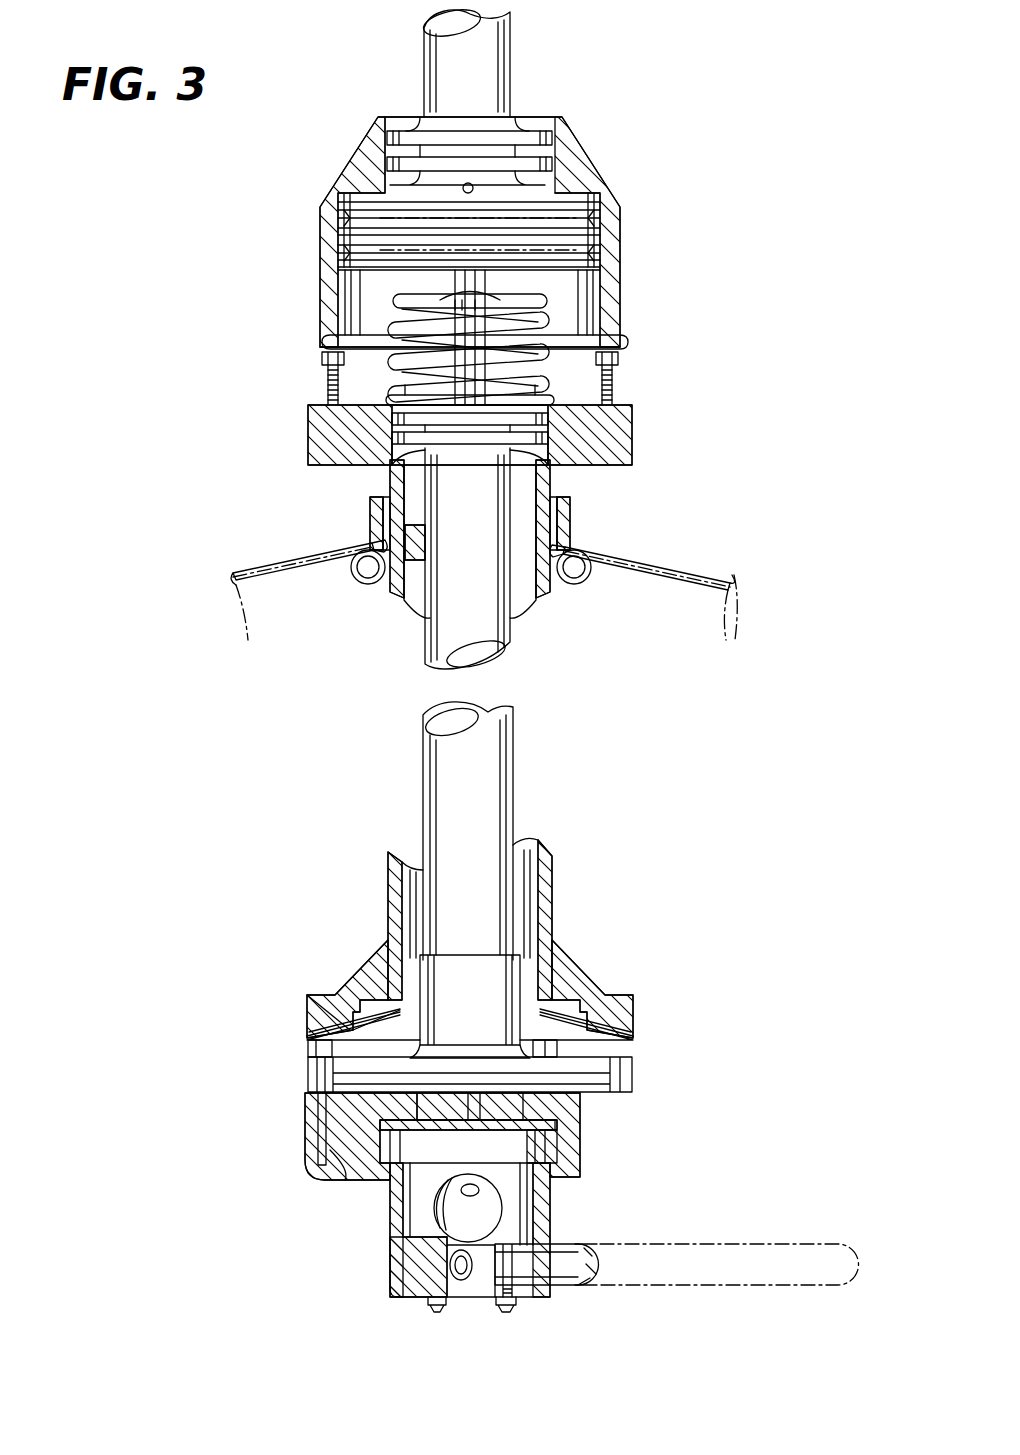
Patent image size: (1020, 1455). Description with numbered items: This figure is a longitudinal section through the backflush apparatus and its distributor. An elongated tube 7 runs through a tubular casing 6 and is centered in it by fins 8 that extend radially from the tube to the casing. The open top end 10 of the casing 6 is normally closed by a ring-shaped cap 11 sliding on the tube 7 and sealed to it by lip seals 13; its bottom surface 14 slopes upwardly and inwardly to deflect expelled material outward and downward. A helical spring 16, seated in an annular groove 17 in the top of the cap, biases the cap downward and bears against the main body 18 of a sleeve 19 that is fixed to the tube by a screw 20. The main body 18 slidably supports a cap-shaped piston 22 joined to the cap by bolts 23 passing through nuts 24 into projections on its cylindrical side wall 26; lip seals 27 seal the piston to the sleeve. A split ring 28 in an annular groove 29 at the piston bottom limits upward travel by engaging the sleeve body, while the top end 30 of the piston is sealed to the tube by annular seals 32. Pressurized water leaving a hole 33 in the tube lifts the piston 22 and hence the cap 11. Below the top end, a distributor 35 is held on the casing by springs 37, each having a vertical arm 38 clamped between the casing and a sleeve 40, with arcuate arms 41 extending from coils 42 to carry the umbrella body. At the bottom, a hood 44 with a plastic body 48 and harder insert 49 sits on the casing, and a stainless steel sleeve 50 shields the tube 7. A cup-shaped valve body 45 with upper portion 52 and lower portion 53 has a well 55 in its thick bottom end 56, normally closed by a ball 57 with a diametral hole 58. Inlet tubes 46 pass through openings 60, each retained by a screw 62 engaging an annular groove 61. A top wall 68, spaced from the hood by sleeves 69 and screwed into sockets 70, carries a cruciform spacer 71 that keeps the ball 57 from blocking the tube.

The casing 6 is at (554, 855).
The tube 7 is at (516, 748).
The fins 8 is at (412, 560).
The open top end 10 is at (550, 472).
The cap 11 is at (632, 432).
The lip seals 13 is at (395, 426).
The bottom surface 14 is at (390, 462).
The helical spring 16 is at (548, 300).
The annular groove 17 is at (548, 400).
The main body 18 is at (340, 290).
The sleeve 19 is at (392, 386).
The screw 20 is at (470, 304).
The piston 22 is at (618, 203).
The bolts 23 is at (328, 396).
The nuts 24 is at (325, 356).
The cylindrical side wall 26 is at (602, 262).
The lip seals 27 is at (345, 245).
The split ring 28 is at (612, 340).
The annular groove 29 is at (335, 338).
The top end 30 is at (538, 112).
The annular seals 32 is at (388, 162).
The hole 33 is at (468, 182).
The distributor 35 is at (712, 545).
The springs 37 is at (246, 592).
The vertical arm 38 is at (378, 510).
The sleeve 40 is at (556, 506).
The arcuate arms 41 is at (300, 582).
The coils 42 is at (362, 586).
The hood 44 is at (615, 1000).
The valve body 45 is at (305, 1146).
The inlet tubes 46 is at (730, 1244).
The plastic body 48 is at (312, 1000).
The plastic insert 49 is at (362, 1012).
The stainless steel sleeve 50 is at (470, 1006).
The upper portion 52 is at (505, 1110).
The lower portion 53 is at (390, 1253).
The well 55 is at (600, 1265).
The bottom end 56 is at (417, 1293).
The ball 57 is at (502, 1262).
The hole 58 is at (452, 1200).
The opening 60 is at (548, 1300).
The annular groove 61 is at (600, 1230).
The screw 62 is at (500, 1310).
The top wall 68 is at (634, 1074).
The sleeves 69 is at (310, 1050).
The sockets 70 is at (320, 1180).
The cruciform spacer 71 is at (500, 1135).